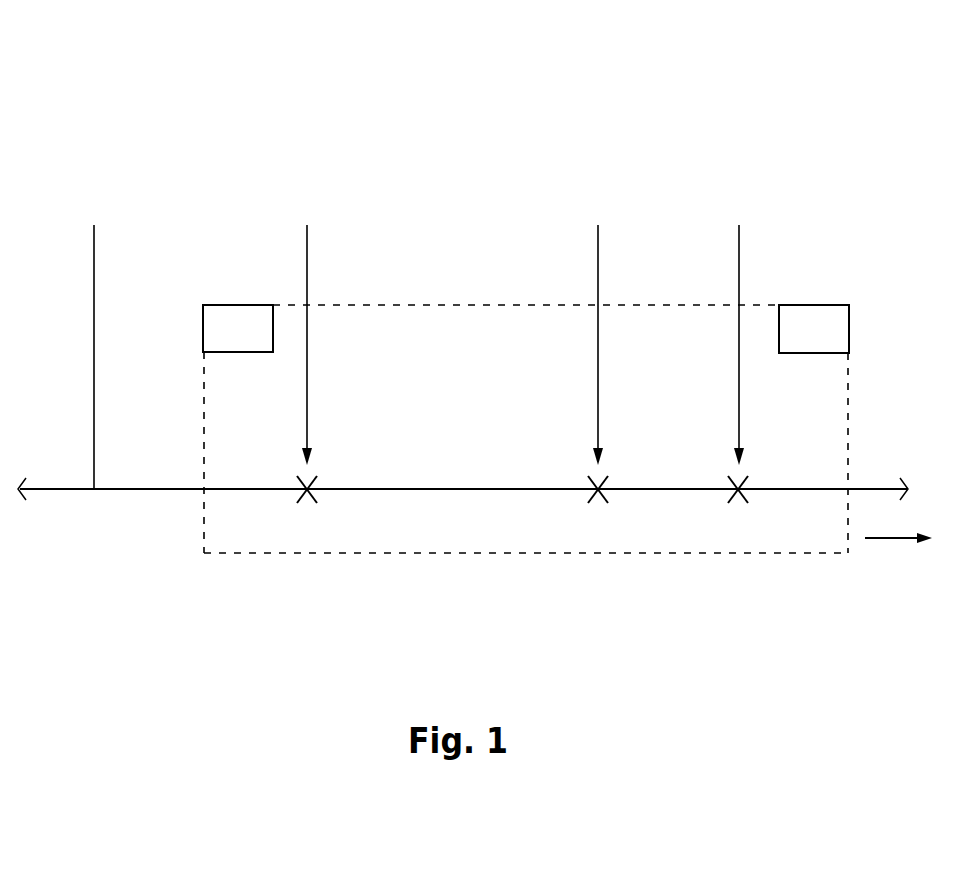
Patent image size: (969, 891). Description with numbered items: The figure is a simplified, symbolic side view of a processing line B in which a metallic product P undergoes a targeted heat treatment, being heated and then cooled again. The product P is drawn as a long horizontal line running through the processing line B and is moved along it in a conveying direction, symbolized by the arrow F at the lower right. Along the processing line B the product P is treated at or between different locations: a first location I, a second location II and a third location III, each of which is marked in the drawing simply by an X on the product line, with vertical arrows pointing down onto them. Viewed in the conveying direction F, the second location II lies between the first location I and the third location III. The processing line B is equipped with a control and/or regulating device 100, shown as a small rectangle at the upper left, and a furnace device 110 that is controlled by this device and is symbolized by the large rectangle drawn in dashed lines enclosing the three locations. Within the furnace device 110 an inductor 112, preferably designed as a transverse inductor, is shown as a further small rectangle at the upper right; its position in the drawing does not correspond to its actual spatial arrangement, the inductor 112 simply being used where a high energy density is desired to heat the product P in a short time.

The processing line B is at (238, 110).
The metallic product P is at (93, 343).
The control and/or regulating device 100 is at (237, 322).
The furnace device 110 is at (387, 305).
The inductor 112 is at (813, 322).
The first location I is at (307, 350).
The second location II is at (598, 350).
The third location III is at (738, 350).
The conveying direction F is at (893, 538).